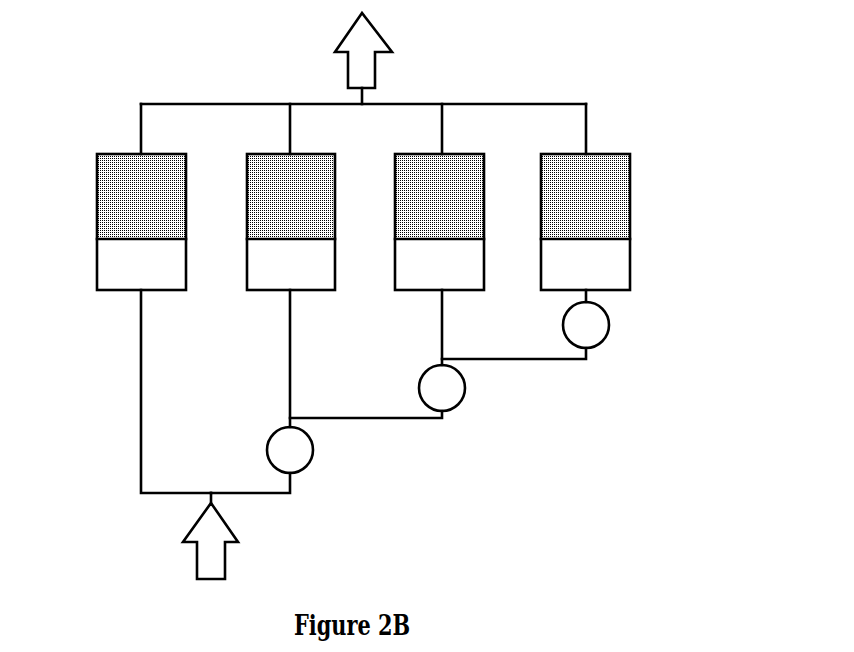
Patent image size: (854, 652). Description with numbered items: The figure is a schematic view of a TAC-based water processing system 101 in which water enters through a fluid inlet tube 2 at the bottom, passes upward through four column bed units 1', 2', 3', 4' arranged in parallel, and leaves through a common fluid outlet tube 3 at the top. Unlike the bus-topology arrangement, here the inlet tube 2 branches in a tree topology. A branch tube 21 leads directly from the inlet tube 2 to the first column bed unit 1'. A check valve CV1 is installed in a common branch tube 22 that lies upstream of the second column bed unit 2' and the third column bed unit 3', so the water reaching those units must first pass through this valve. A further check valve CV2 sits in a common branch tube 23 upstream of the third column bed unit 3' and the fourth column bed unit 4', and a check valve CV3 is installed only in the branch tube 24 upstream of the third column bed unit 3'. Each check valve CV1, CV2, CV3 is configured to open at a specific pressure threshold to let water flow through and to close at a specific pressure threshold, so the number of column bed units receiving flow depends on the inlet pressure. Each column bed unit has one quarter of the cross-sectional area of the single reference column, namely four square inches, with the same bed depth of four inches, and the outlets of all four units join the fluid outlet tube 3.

The TAC-based water processing system 101 is at (363, 73).
The fluid outlet tube 3 is at (363, 58).
The fluid inlet tube 2 is at (210, 536).
The first column bed unit 1' is at (126, 197).
The second column bed unit 2' is at (278, 197).
The third column bed unit 3' is at (427, 197).
The fourth column bed unit 4' is at (574, 197).
The branch tube 21 is at (163, 391).
The common branch tube 22 is at (250, 484).
The common branch tube 23 is at (366, 428).
The branch tube 24 is at (514, 368).
The check valve CV1 is at (290, 381).
The check valve CV2 is at (442, 350).
The check valve CV3 is at (586, 319).